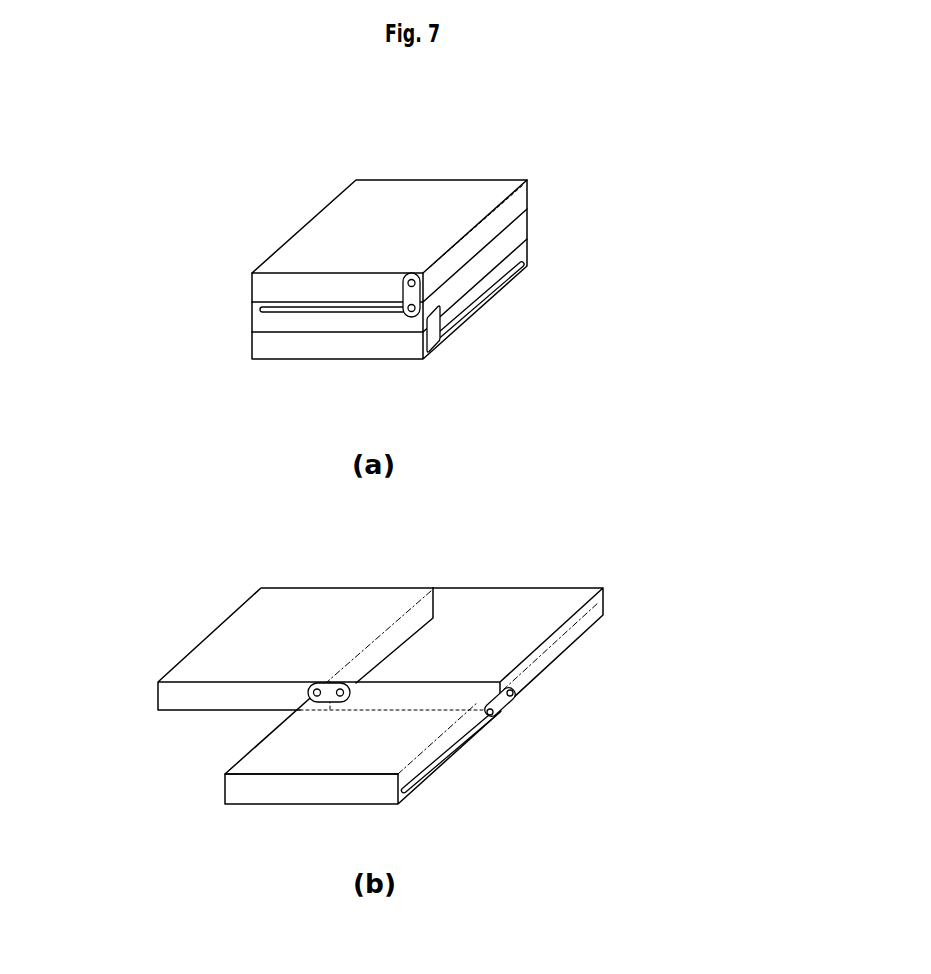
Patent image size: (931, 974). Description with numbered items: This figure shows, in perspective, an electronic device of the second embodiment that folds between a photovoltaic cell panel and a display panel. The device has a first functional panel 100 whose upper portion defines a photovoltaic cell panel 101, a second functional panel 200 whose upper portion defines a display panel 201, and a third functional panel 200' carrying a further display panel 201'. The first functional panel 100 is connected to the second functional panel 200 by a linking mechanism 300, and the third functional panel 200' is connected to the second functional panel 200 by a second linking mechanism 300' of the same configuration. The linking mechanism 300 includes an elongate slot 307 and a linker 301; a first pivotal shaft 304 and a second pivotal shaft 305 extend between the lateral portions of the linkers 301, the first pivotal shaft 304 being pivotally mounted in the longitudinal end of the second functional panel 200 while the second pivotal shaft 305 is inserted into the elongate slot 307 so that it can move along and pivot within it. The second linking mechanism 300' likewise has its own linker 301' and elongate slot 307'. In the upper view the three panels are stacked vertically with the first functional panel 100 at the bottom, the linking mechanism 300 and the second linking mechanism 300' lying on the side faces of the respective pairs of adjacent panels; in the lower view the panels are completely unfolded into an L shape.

The first functional panel 100 is at (528, 252).
The photovoltaic cell panel 101 is at (248, 763).
The second functional panel 200 is at (445, 439).
The third functional panel 200' is at (375, 412).
The display panel 201 is at (578, 437).
The further display panel 201' is at (359, 591).
The linking mechanism 300 is at (570, 531).
The second linking mechanism 300' is at (236, 471).
The linker 301 is at (515, 536).
The linker of second linking mechanism 301' is at (273, 476).
The first pivotal shaft 304 is at (512, 271).
The second pivotal shaft 305 is at (418, 340).
The elongate slot 307 is at (517, 531).
The elongate slot of second linking mechanism 307' is at (272, 315).